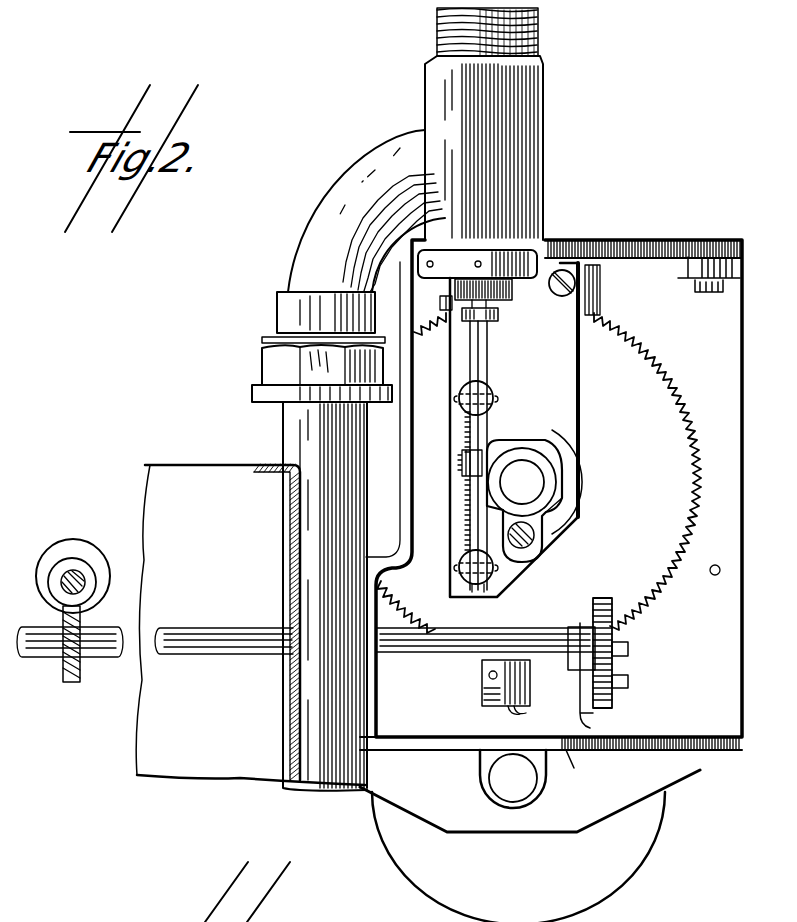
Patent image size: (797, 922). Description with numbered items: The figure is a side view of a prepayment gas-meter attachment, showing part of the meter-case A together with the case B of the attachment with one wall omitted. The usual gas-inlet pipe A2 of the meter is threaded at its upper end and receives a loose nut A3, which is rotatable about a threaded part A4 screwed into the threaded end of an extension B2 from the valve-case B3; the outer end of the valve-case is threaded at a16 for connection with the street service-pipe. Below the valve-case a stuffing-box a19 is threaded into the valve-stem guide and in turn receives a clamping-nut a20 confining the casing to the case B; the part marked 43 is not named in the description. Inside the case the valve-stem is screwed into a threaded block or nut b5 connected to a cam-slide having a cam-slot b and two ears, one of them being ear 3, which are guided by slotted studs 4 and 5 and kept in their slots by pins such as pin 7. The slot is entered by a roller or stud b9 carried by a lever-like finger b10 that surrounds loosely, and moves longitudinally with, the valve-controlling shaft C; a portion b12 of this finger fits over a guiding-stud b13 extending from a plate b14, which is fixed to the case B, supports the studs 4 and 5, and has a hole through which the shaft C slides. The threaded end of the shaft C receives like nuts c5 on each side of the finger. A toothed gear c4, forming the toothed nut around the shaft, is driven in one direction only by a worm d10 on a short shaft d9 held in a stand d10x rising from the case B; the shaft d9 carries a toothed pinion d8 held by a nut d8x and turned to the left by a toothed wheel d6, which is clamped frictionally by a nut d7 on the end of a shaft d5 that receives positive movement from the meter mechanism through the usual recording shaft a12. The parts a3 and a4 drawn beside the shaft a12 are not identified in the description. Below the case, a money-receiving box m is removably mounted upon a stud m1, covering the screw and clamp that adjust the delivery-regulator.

The case B is at (730, 527).
The extension B2 is at (400, 148).
The valve-case B3 is at (545, 130).
The thread a16 is at (433, 18).
The clamping-nut a20 is at (498, 262).
The stuffing-box a19 is at (512, 296).
The latch 43 is at (440, 305).
The threaded block or nut b5 is at (495, 332).
The cam-slot b is at (493, 394).
The plate b14 is at (568, 383).
The toothed gear c4 is at (660, 396).
The slotted stud 4 is at (494, 404).
The pin 7 is at (462, 570).
The ear 3 is at (474, 590).
The slotted stud 5 is at (486, 584).
The roller or stud b9 is at (465, 460).
The lever-like finger b10 is at (500, 453).
The valve-controlling shaft C is at (530, 472).
The nuts c5 is at (575, 462).
The portion of lever b12 is at (560, 527).
The guiding-stud b13 is at (530, 546).
The shaft d5 is at (242, 631).
The short shaft d9 is at (480, 682).
The worm d10 is at (510, 711).
The toothed wheel d6 is at (604, 640).
The nut d7 is at (628, 652).
The nut d8x is at (628, 682).
The toothed pinion d8 is at (600, 706).
The stand d10x is at (574, 768).
The stud m1 is at (500, 786).
The money-receiving box m is at (622, 852).
The plate A is at (158, 480).
The threaded part A4 is at (268, 340).
The loose nut A3 is at (270, 372).
The gas-inlet pipe A2 is at (286, 436).
The ring a3 is at (45, 574).
The shaft a12 is at (76, 572).
The stem a4 is at (66, 684).